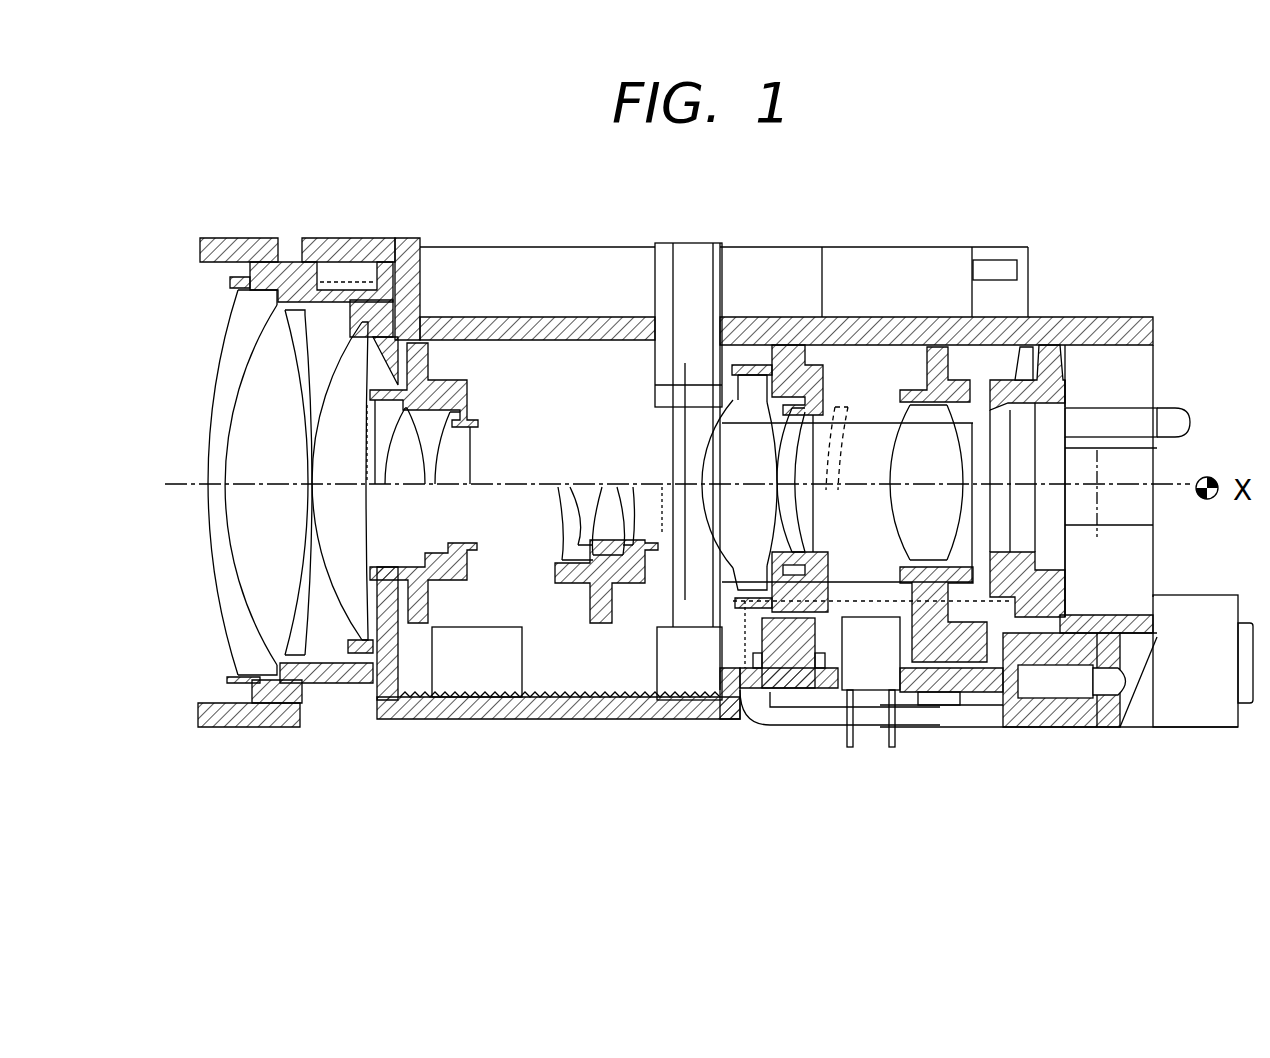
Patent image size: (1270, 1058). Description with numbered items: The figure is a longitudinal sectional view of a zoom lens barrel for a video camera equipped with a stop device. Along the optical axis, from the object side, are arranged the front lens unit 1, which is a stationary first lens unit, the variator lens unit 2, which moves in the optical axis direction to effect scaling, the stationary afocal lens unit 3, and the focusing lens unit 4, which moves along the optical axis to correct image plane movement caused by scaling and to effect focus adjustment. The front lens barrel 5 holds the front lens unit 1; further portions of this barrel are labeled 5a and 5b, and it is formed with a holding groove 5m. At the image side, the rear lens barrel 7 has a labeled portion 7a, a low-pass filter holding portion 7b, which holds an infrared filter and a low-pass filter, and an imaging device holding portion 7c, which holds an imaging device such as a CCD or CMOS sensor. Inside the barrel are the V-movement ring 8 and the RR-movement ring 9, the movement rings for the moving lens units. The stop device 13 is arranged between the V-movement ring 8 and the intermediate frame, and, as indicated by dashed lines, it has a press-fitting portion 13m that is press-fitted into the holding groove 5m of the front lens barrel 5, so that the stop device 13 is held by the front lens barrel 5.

The front lens unit 1 is at (248, 552).
The variator lens unit 2 is at (458, 452).
The afocal lens unit 3 is at (763, 513).
The focusing lens unit 4 is at (927, 540).
The front lens barrel 5 is at (238, 240).
The fixed barrel bottom wall 5a is at (538, 720).
The fixed barrel engaging portion 5b is at (340, 267).
The holding groove 5m is at (694, 720).
The rear lens barrel 7 is at (1122, 317).
The outer barrel front wall 7a is at (411, 243).
The low-pass filter holding portion 7b is at (1040, 347).
The imaging device holding portion 7c is at (1130, 410).
The V-movement ring 8 is at (453, 317).
The RR-movement ring 9 is at (945, 347).
The stop device 13 is at (670, 420).
The press-fitting portion 13m is at (730, 722).